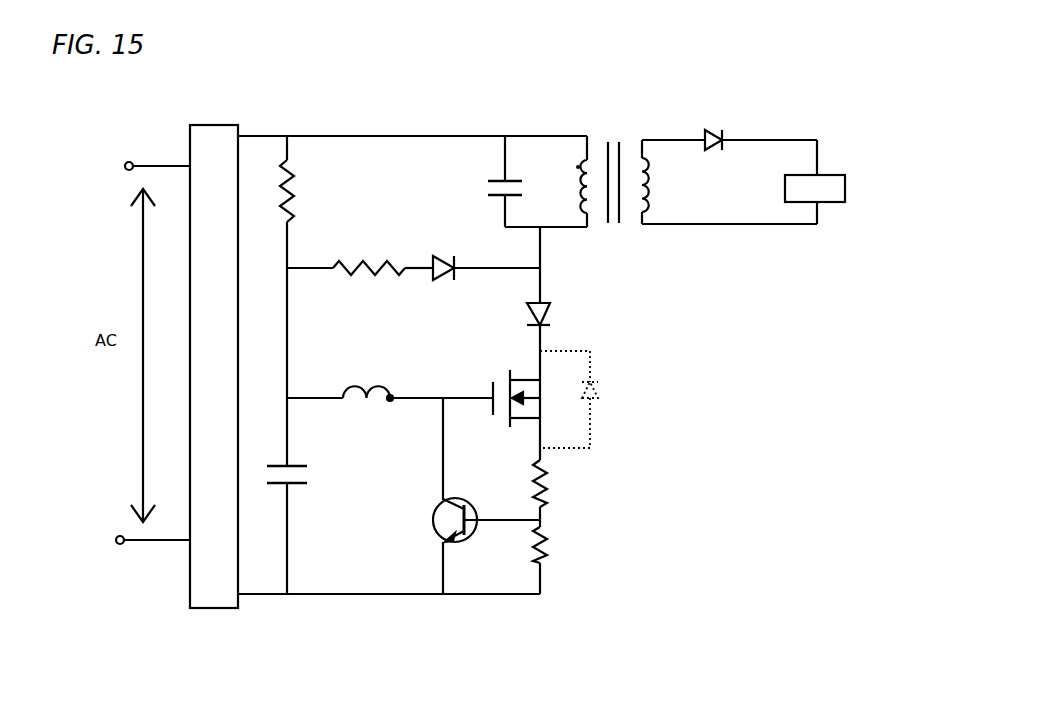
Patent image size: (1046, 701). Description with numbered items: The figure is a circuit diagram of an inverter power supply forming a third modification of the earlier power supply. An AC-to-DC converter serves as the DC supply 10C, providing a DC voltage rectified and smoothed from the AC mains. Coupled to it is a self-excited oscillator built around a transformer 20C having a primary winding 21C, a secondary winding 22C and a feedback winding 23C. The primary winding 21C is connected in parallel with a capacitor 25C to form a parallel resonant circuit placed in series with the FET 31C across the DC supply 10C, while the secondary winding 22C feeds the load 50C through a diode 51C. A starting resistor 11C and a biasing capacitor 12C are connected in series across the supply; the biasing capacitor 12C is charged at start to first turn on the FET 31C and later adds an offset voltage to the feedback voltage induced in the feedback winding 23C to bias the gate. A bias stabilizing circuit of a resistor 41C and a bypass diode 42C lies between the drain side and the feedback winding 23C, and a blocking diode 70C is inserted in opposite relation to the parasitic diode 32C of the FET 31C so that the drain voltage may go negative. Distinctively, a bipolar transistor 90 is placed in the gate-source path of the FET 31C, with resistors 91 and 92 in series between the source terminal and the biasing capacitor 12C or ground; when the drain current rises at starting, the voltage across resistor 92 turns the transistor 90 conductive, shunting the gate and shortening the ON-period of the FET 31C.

The DC supply 10C is at (247, 117).
The starting resistor 11C is at (305, 183).
The biasing capacitor 12C is at (312, 462).
The transformer 20C is at (608, 153).
The primary winding 21C is at (570, 188).
The secondary winding 22C is at (653, 185).
The feedback winding 23C is at (358, 370).
The capacitor 25C is at (483, 174).
The FET 31C is at (482, 370).
The parasitic diode 32C is at (611, 399).
The resistor 41C is at (360, 245).
The bypass diode 42C is at (442, 245).
The load 50C is at (823, 157).
The diode 51C is at (715, 117).
The blocking diode 70C is at (557, 312).
The bipolar transistor 90 is at (425, 505).
The resistor 91 is at (555, 483).
The resistor 92 is at (555, 557).